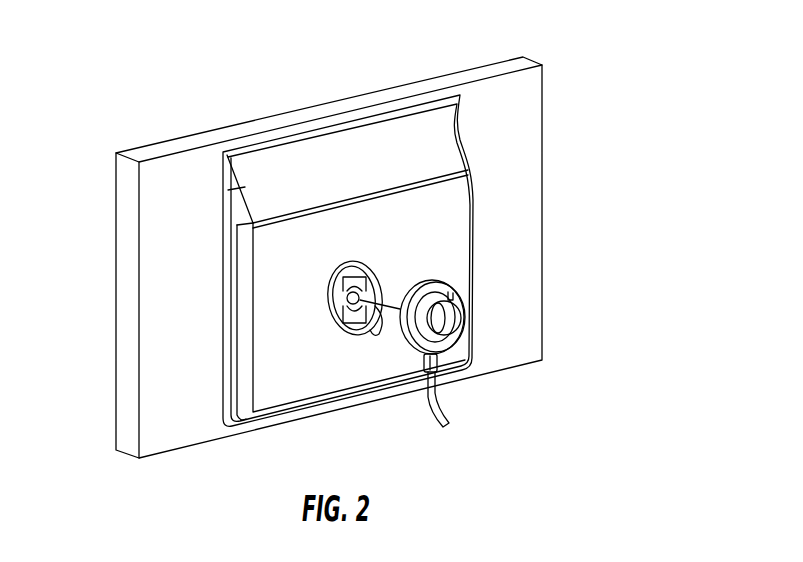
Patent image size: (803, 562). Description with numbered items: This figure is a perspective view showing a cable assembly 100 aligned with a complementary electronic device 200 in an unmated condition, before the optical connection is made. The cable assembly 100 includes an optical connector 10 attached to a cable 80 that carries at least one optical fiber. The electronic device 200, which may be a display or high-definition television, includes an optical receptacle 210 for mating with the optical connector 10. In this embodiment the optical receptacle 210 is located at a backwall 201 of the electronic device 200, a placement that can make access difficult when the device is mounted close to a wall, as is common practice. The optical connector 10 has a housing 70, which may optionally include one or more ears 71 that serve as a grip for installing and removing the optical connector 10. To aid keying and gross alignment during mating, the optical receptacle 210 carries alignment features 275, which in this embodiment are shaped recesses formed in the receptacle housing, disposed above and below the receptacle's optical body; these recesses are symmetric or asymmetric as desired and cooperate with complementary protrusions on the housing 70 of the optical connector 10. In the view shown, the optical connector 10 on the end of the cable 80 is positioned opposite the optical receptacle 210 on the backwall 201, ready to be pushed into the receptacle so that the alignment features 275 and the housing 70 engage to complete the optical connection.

The optical connector 10 is at (491, 305).
The housing 70 is at (437, 282).
The ears 71 is at (463, 305).
The cable 80 is at (437, 402).
The cable assembly 100 is at (518, 305).
The electronic device 200 is at (329, 218).
The backwall 201 is at (372, 353).
The optical receptacle 210 is at (365, 288).
The alignment features 275 is at (347, 267).